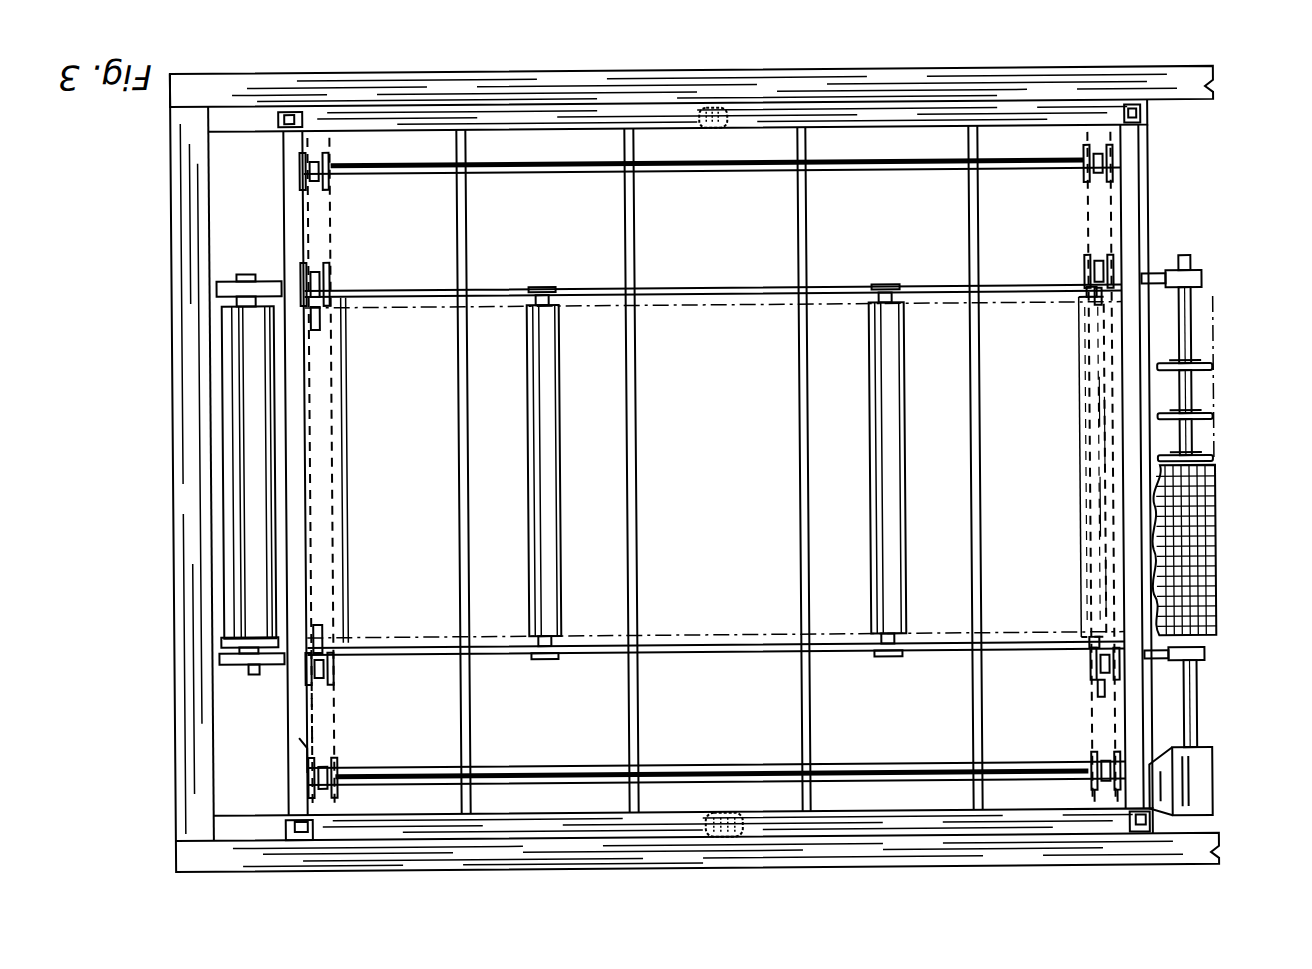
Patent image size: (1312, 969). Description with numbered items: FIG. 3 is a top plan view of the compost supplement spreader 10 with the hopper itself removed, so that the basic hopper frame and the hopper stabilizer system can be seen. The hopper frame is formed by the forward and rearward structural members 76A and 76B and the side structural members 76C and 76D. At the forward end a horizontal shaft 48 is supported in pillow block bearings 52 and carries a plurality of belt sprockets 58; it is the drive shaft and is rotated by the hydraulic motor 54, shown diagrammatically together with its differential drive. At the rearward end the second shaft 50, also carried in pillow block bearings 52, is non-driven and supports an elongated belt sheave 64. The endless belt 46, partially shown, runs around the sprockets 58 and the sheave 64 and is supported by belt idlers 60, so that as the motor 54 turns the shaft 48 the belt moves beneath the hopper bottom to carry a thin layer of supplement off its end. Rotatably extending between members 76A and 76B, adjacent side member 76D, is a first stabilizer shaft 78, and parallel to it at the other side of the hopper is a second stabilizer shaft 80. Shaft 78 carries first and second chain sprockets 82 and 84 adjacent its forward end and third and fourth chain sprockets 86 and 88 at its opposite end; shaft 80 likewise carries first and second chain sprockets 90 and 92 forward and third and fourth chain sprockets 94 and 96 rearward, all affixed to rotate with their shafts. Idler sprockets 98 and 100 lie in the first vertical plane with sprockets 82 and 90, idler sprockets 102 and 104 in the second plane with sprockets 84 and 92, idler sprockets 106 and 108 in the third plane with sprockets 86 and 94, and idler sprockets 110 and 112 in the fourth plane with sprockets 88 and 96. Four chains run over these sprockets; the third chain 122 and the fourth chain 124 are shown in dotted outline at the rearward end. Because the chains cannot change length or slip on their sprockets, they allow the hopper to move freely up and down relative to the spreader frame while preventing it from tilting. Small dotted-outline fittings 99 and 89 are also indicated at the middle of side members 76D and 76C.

The frame 10 is at (340, 45).
The endless belt 46 is at (1200, 601).
The horizontal shaft 48 is at (1188, 259).
The second shaft 50 is at (247, 666).
The pillow block bearings 52 is at (218, 289).
The hydraulic motor 54 is at (1195, 776).
The belt sprockets 58 is at (1205, 420).
The belt idlers 60 is at (530, 458).
The elongated belt sheave 64 is at (235, 546).
The forward structural member 76A is at (1125, 712).
The rearward structural member 76B is at (286, 708).
The side structural member 76C is at (530, 818).
The side structural member 76D is at (500, 128).
The first stabilizer shaft 78 is at (685, 171).
The second stabilizer shaft 80 is at (675, 774).
The first chain sprocket 82 is at (1115, 176).
The second chain sprocket 84 is at (1086, 172).
The third chain sprocket 86 is at (281, 112).
The fourth chain sprocket 88 is at (302, 168).
The clamp 89 is at (716, 838).
The first chain sprocket 90 is at (1108, 791).
The second chain sprocket 92 is at (1089, 762).
The third chain sprocket 94 is at (334, 758).
The fourth chain sprocket 96 is at (283, 830).
The idler sprocket 98 is at (1110, 262).
The clamp 99 is at (710, 128).
The idler sprocket 100 is at (1100, 683).
The idler sprocket 102 is at (1096, 275).
The idler sprocket 104 is at (1089, 660).
The idler sprocket 106 is at (321, 322).
The idler sprocket 108 is at (333, 666).
The idler sprocket 110 is at (312, 277).
The idler sprocket 112 is at (321, 620).
The third chain 122 is at (333, 725).
The fourth chain 124 is at (300, 740).